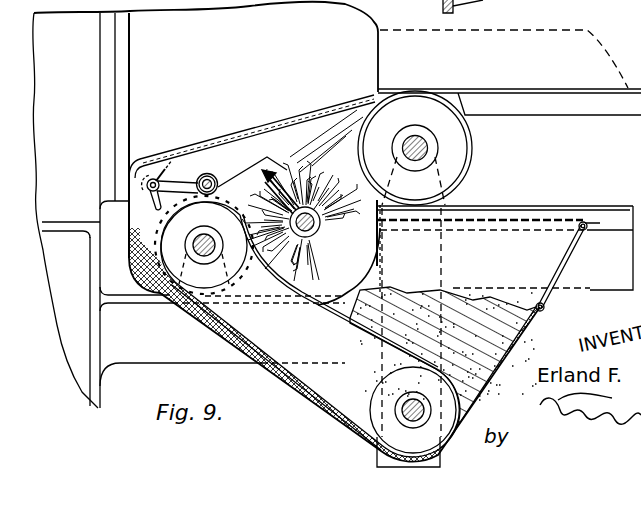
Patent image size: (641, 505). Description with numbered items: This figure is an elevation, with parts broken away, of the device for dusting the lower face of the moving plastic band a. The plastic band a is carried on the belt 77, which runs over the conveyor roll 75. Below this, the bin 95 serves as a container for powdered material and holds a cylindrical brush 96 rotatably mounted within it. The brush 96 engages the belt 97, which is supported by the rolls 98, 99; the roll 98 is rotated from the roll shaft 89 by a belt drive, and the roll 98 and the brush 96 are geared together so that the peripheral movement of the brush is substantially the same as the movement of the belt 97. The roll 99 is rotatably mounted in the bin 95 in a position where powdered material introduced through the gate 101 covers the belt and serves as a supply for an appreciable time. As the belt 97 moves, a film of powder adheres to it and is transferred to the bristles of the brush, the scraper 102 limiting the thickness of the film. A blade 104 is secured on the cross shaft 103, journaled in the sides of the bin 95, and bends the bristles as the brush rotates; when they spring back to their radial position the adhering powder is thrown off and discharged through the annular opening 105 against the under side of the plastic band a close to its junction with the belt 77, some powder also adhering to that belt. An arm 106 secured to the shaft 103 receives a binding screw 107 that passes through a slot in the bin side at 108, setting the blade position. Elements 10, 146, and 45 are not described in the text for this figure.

The cabinet 10 is at (337, 21).
The bracket 146 is at (508, 6).
The plastic band a is at (455, 66).
The belt 77 is at (517, 91).
The conveyor roll 75 is at (462, 148).
The roll shaft 89 is at (425, 155).
The cylindrical brush 96 is at (355, 252).
The gate 101 is at (560, 262).
The chute plate 45 is at (600, 287).
The belt 97 is at (372, 332).
The roll 99 is at (384, 400).
The bin 95 is at (487, 385).
The scraper 102 is at (318, 305).
The roll 98 is at (234, 276).
The cross shaft 103 is at (210, 173).
The blade 104 is at (264, 157).
The annular opening 105 is at (299, 161).
The arm 106 is at (179, 178).
The binding screw 107 is at (163, 178).
The slot 108 is at (153, 177).